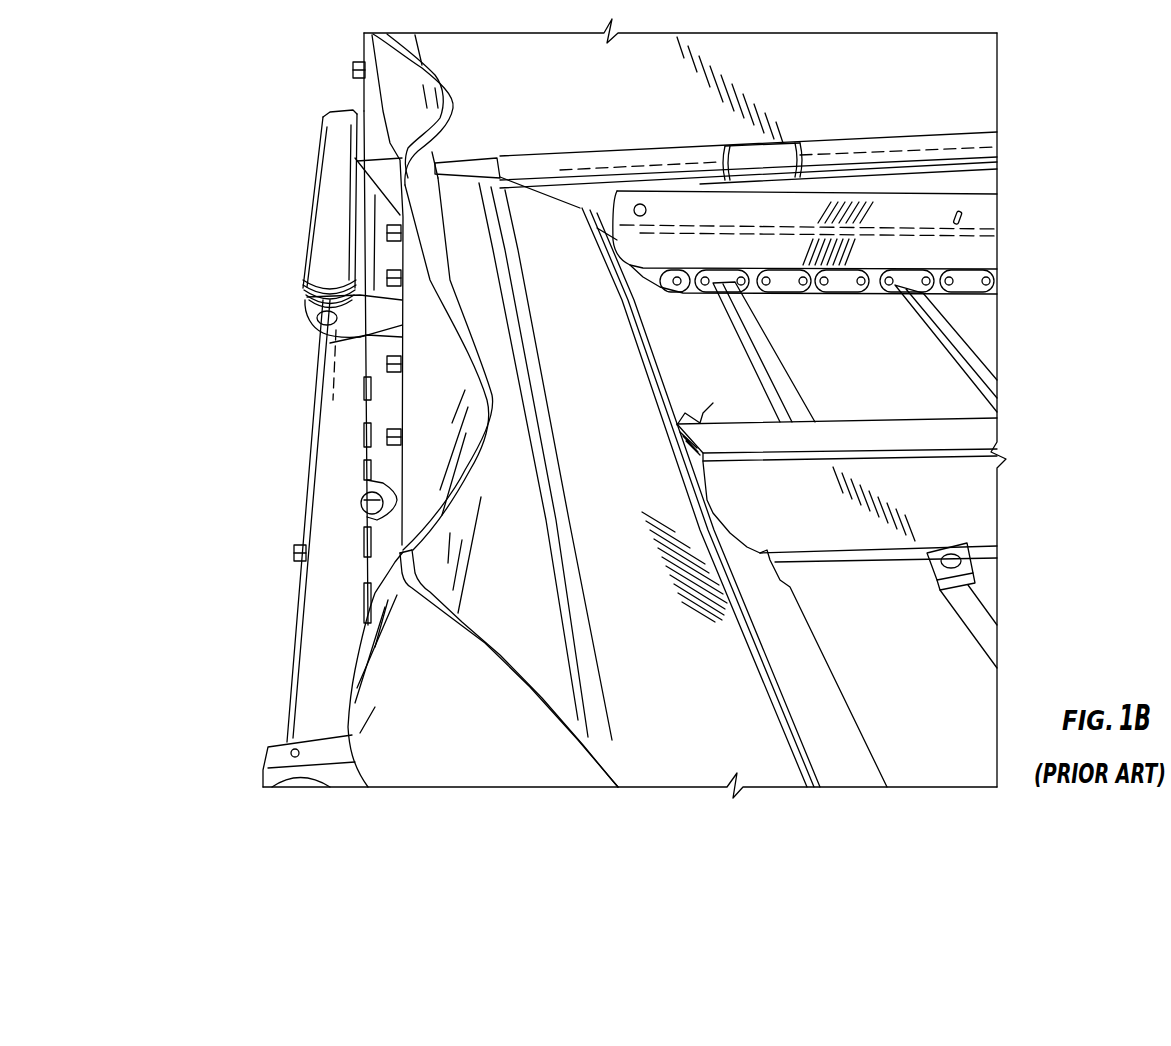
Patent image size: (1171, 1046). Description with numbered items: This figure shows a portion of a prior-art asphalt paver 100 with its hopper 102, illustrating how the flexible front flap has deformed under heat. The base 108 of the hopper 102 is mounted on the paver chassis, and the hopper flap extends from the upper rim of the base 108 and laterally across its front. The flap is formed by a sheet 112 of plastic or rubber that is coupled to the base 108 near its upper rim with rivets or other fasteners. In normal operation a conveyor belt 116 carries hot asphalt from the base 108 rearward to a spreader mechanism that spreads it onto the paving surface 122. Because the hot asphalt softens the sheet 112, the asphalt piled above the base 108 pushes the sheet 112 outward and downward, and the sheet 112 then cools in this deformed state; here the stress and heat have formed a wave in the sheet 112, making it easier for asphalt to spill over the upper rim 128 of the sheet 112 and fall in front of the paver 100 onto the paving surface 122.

The asphalt paver 100 is at (188, 102).
The hopper 102 is at (945, 92).
The base 108 is at (972, 437).
The sheet 112 is at (427, 342).
The conveyor belt 116 is at (933, 370).
The paving surface 122 is at (230, 628).
The upper rim 128 is at (400, 177).